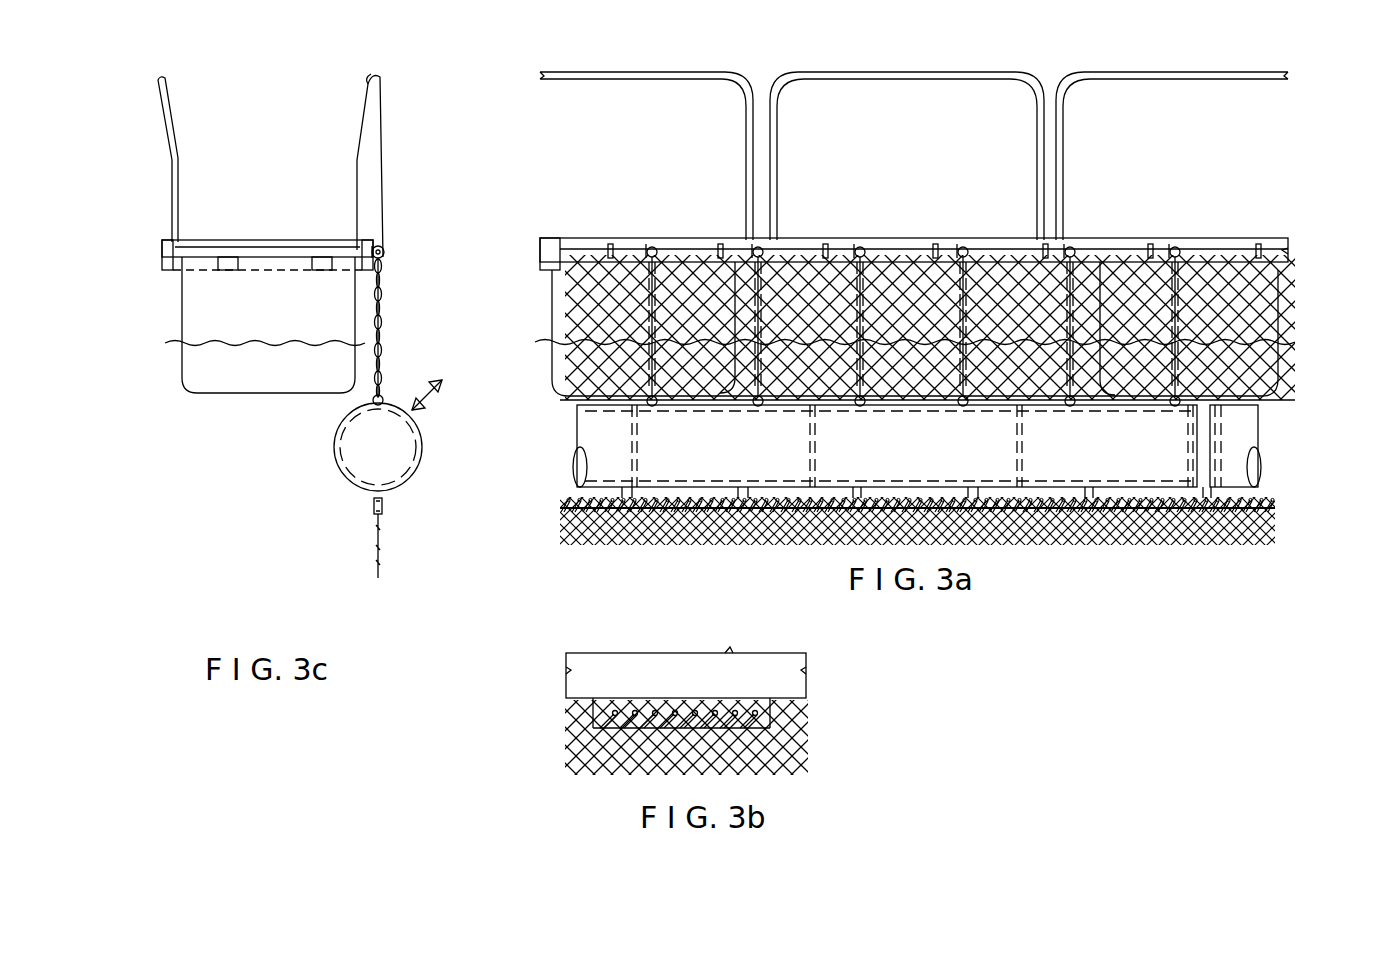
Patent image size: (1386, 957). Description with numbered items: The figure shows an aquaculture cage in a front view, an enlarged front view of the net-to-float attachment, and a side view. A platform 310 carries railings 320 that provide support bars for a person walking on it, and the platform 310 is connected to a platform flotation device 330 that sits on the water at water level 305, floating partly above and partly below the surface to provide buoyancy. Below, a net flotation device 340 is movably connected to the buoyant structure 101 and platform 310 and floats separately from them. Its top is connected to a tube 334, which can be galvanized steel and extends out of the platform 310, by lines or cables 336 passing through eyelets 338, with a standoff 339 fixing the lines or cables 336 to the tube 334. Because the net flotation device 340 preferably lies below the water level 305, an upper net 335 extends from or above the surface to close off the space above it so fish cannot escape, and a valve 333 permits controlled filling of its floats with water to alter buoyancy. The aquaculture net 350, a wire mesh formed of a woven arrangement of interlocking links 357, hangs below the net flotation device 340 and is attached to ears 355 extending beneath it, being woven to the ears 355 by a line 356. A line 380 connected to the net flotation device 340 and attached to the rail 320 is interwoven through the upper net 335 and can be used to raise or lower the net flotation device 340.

In FIG. 3C, the buoyant structure 101 is at (156, 266).
In FIG. 3C, the water level 305 is at (170, 348).
In FIG. 3A, the water level 305 is at (545, 345).
In FIG. 3C, the platform 310 is at (272, 242).
In FIG. 3A, the platform 310 is at (620, 240).
In FIG. 3C, the railings 320 is at (168, 92).
In FIG. 3A, the railings 320 is at (725, 72).
In FIG. 3C, the platform flotation device 330 is at (190, 304).
In FIG. 3A, the platform flotation device 330 is at (560, 325).
In FIG. 3C, the valve 333 is at (431, 373).
In FIG. 3C, the tube 334 is at (386, 254).
In FIG. 3A, the tube 334 is at (903, 250).
In FIG. 3A, the upper net 335 is at (805, 262).
In FIG. 3C, the lines or cables 336 is at (385, 305).
In FIG. 3A, the lines or cables 336 is at (600, 268).
In FIG. 3C, the eyelets 338 is at (376, 272).
In FIG. 3A, the eyelets 338 is at (965, 252).
In FIG. 3C, the standoff 339 is at (383, 250).
In FIG. 3A, the standoff 339 is at (822, 262).
In FIG. 3C, the net flotation device 340 is at (425, 440).
In FIG. 3A, the net flotation device 340 is at (1245, 424).
In FIG. 3B, the net flotation device 340 is at (798, 660).
In FIG. 3C, the aquaculture net 350 is at (382, 538).
In FIG. 3A, the aquaculture net 350 is at (1220, 545).
In FIG. 3A, the ears 355 is at (722, 497).
In FIG. 3B, the ears 355 is at (593, 705).
In FIG. 3C, the line 356 is at (372, 510).
In FIG. 3A, the line 356 is at (938, 497).
In FIG. 3B, the line 356 is at (628, 720).
In FIG. 3B, the interlocking links 357 is at (785, 767).
In FIG. 3C, the line 380 is at (388, 100).